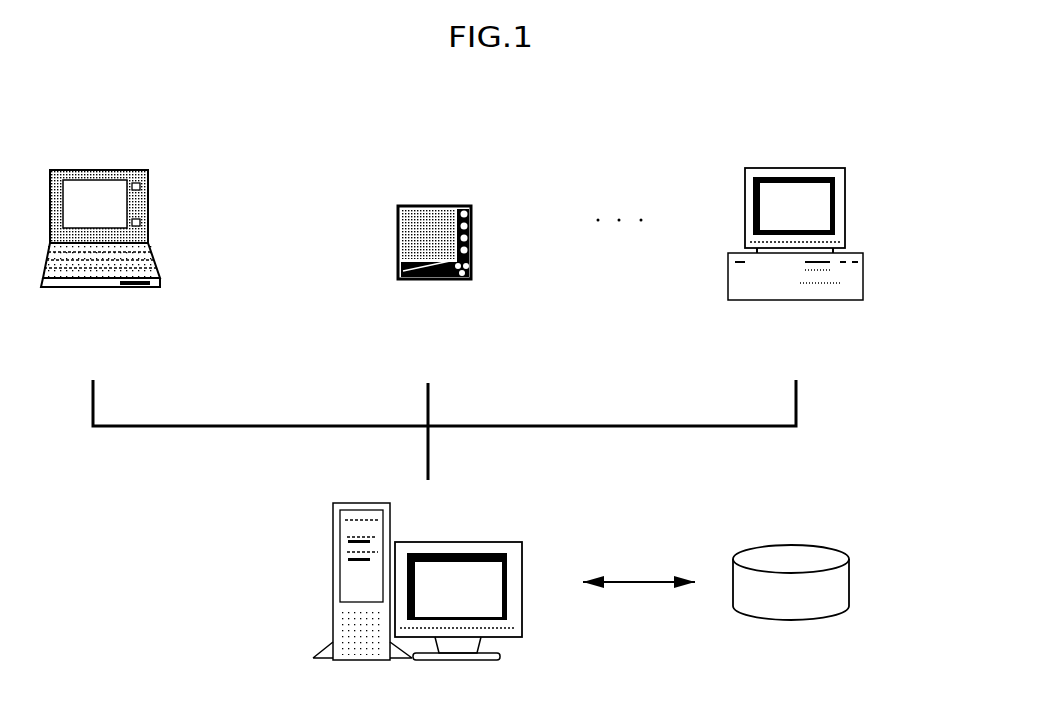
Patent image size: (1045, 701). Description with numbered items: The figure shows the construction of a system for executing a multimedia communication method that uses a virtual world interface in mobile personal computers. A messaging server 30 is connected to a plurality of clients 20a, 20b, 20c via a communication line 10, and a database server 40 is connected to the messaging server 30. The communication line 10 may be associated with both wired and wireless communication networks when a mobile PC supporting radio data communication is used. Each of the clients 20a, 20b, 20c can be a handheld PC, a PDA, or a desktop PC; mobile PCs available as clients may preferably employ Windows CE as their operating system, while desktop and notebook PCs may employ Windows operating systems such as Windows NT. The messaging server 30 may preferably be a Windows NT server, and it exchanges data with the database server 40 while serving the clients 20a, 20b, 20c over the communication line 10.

The communication line 10 is at (533, 427).
The client 20a is at (149, 246).
The client 20b is at (471, 233).
The client 20c is at (845, 232).
The messaging server 30 is at (522, 622).
The database (DB) server 40 is at (849, 590).